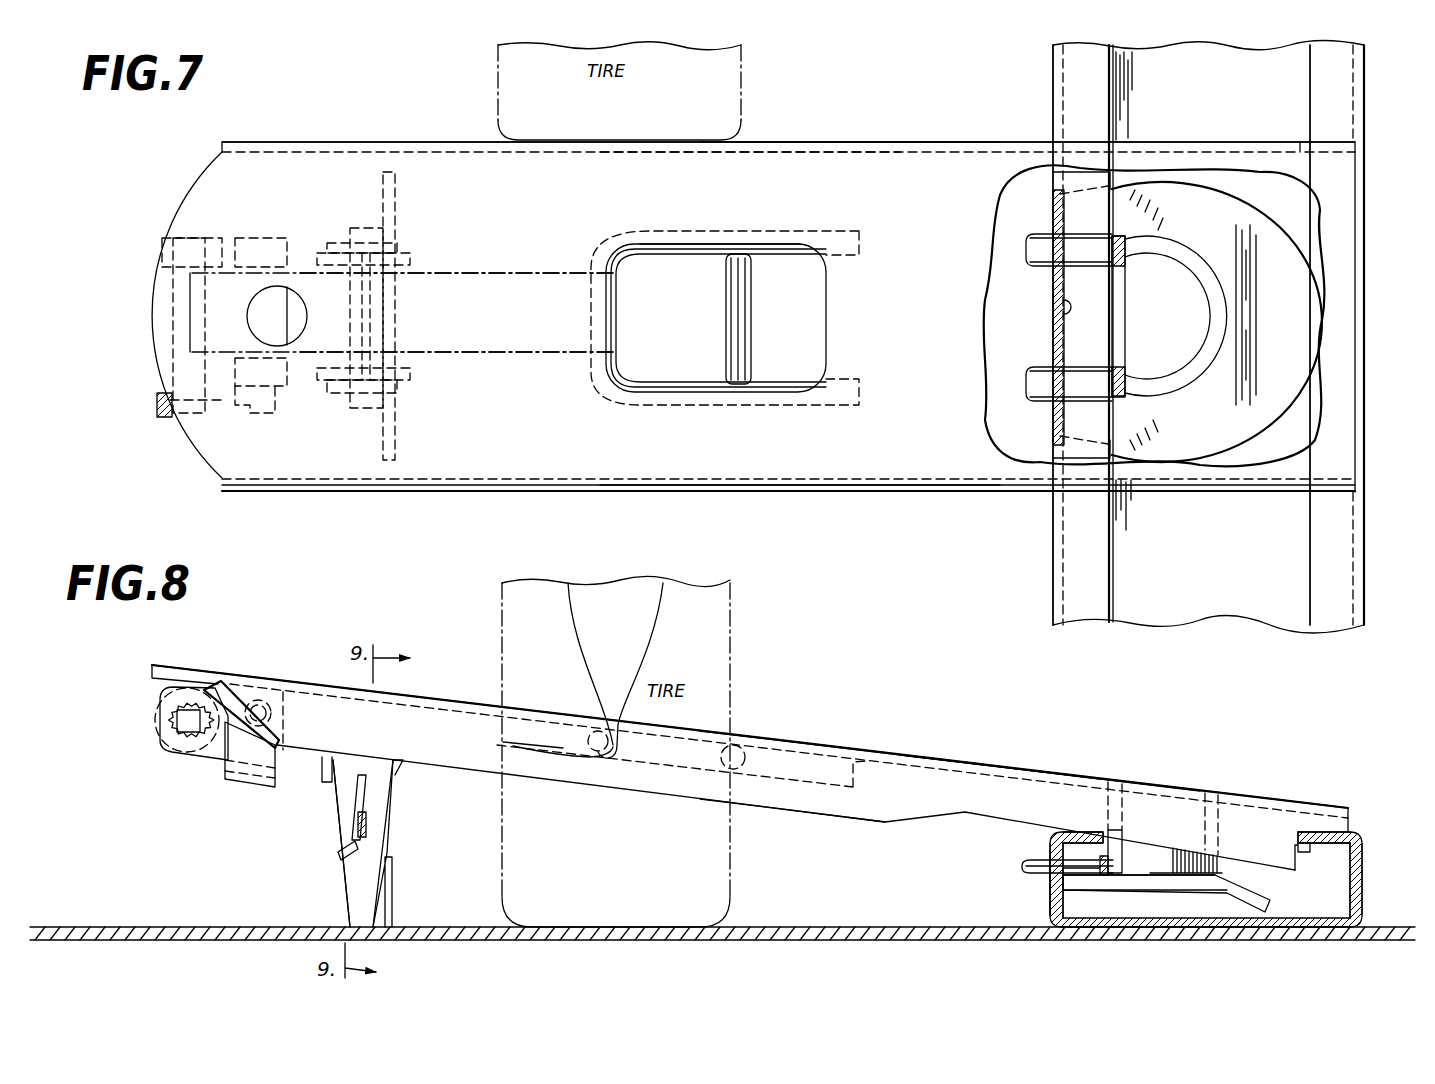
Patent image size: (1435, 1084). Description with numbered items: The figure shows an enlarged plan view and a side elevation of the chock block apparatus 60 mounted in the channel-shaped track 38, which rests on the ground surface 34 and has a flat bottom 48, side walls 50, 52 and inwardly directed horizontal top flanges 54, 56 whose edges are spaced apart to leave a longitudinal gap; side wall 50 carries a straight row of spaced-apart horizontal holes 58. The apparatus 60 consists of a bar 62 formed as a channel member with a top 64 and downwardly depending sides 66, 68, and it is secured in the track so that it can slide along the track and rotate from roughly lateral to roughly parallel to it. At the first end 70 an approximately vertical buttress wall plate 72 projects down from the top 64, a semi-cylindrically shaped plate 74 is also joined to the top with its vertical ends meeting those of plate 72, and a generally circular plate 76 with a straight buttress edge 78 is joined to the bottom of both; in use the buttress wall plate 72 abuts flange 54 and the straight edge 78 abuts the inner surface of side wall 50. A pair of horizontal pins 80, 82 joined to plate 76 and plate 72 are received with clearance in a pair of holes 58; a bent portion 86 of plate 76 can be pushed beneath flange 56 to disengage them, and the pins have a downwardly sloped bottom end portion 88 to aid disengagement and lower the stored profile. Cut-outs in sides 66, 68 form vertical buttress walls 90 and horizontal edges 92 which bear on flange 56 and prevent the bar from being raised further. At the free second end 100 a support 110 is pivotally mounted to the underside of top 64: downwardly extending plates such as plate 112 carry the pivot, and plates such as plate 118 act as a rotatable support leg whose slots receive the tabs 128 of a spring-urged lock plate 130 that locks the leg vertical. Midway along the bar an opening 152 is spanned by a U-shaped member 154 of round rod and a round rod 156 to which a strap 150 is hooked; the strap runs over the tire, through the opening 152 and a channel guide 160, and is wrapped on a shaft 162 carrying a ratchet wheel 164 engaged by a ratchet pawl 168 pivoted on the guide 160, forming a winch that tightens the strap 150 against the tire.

In FIG. 8, the ground surface 34 is at (872, 941).
In FIG. 7, the track 38 is at (1374, 518).
In FIG. 8, the track 38 is at (1375, 848).
In FIG. 7, the flat bottom 48 is at (1222, 572).
In FIG. 8, the flat bottom 48 is at (1157, 928).
In FIG. 7, the side wall 50 is at (1053, 523).
In FIG. 8, the side wall 50 is at (1050, 850).
In FIG. 7, the side wall 52 is at (1370, 578).
In FIG. 8, the side wall 52 is at (1363, 890).
In FIG. 7, the top flange 54 is at (1089, 600).
In FIG. 8, the top flange 54 is at (1085, 830).
In FIG. 7, the top flange 56 is at (1338, 606).
In FIG. 8, the top flange 56 is at (1325, 830).
In FIG. 7, the holes 58 is at (1055, 276).
In FIG. 8, the holes 58 is at (1053, 893).
In FIG. 7, the chock block apparatus 60 is at (797, 128).
In FIG. 8, the chock block apparatus 60 is at (788, 726).
In FIG. 8, the bar 62 is at (882, 747).
In FIG. 7, the top 64 is at (712, 199).
In FIG. 8, the top 64 is at (1012, 767).
In FIG. 7, the side 66 is at (856, 141).
In FIG. 7, the side 68 is at (802, 493).
In FIG. 8, the side 68 is at (916, 797).
In FIG. 7, the first end 70 is at (1222, 141).
In FIG. 8, the first end 70 is at (1237, 797).
In FIG. 7, the buttress wall plate 72 is at (1125, 302).
In FIG. 8, the buttress wall plate 72 is at (1123, 848).
In FIG. 7, the semi-cylindrically shaped plate 74 is at (1183, 386).
In FIG. 8, the semi-cylindrically shaped plate 74 is at (1164, 871).
In FIG. 7, the plate 76 is at (1202, 229).
In FIG. 8, the plate 76 is at (1153, 888).
In FIG. 7, the straight buttress edge 78 is at (1060, 320).
In FIG. 8, the straight buttress edge 78 is at (1067, 877).
In FIG. 7, the pin 80 is at (1028, 383).
In FIG. 8, the pin 80 is at (1021, 866).
In FIG. 7, the pin 82 is at (1033, 234).
In FIG. 7, the bent portion 86 is at (1261, 270).
In FIG. 8, the bent portion 86 is at (1270, 888).
In FIG. 8, the sloped bottom end portion 88 is at (1035, 888).
In FIG. 8, the buttress walls 90 is at (1301, 850).
In FIG. 8, the horizontal edges 92 is at (1315, 827).
In FIG. 7, the second end 100 is at (341, 141).
In FIG. 8, the second end 100 is at (303, 680).
In FIG. 7, the support 110 is at (416, 396).
In FIG. 8, the support 110 is at (445, 810).
In FIG. 8, the plate 112 is at (327, 758).
In FIG. 8, the plate 118 is at (335, 806).
In FIG. 8, the tabs 128 is at (366, 795).
In FIG. 8, the lock plate 130 is at (370, 805).
In FIG. 7, the strap 150 is at (523, 346).
In FIG. 8, the strap 150 is at (677, 583).
In FIG. 7, the opening 152 is at (687, 368).
In FIG. 7, the U-shaped member 154 is at (675, 256).
In FIG. 8, the U-shaped member 154 is at (795, 773).
In FIG. 7, the round rod 156 is at (751, 315).
In FIG. 8, the round rod 156 is at (750, 742).
In FIG. 8, the channel guide 160 is at (216, 772).
In FIG. 7, the shaft 162 is at (170, 326).
In FIG. 8, the ratchet wheel 164 is at (190, 741).
In FIG. 8, the ratchet pawl 168 is at (212, 682).